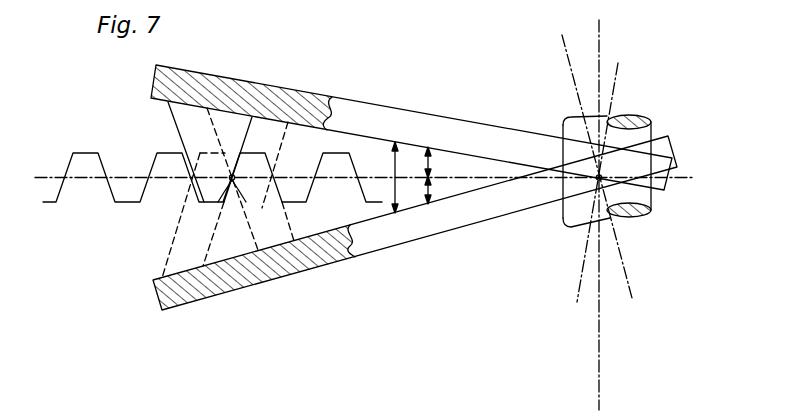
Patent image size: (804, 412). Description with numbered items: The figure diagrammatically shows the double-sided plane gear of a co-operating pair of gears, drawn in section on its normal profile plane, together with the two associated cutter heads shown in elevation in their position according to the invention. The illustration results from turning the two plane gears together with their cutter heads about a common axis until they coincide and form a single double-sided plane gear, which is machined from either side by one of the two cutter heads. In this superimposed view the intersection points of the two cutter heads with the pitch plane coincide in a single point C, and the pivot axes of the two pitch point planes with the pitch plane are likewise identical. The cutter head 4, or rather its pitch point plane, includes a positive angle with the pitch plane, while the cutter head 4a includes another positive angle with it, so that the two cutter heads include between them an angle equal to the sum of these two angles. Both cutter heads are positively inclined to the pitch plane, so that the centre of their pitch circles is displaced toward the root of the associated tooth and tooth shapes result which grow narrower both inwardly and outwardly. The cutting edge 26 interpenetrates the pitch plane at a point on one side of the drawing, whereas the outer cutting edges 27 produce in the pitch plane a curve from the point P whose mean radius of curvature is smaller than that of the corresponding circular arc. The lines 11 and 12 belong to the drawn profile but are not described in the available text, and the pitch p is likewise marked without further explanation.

The cutter head 4 is at (487, 127).
The cutter head 4a is at (474, 224).
The flank line of displaced tool profile 11 is at (276, 92).
The flank line of cutting profile 12 is at (212, 128).
The edge 26 is at (254, 234).
The outer cutting edges 27 is at (208, 243).
The intersection point C is at (596, 181).
The pitch p is at (231, 181).
The point on pitch plane P is at (233, 181).